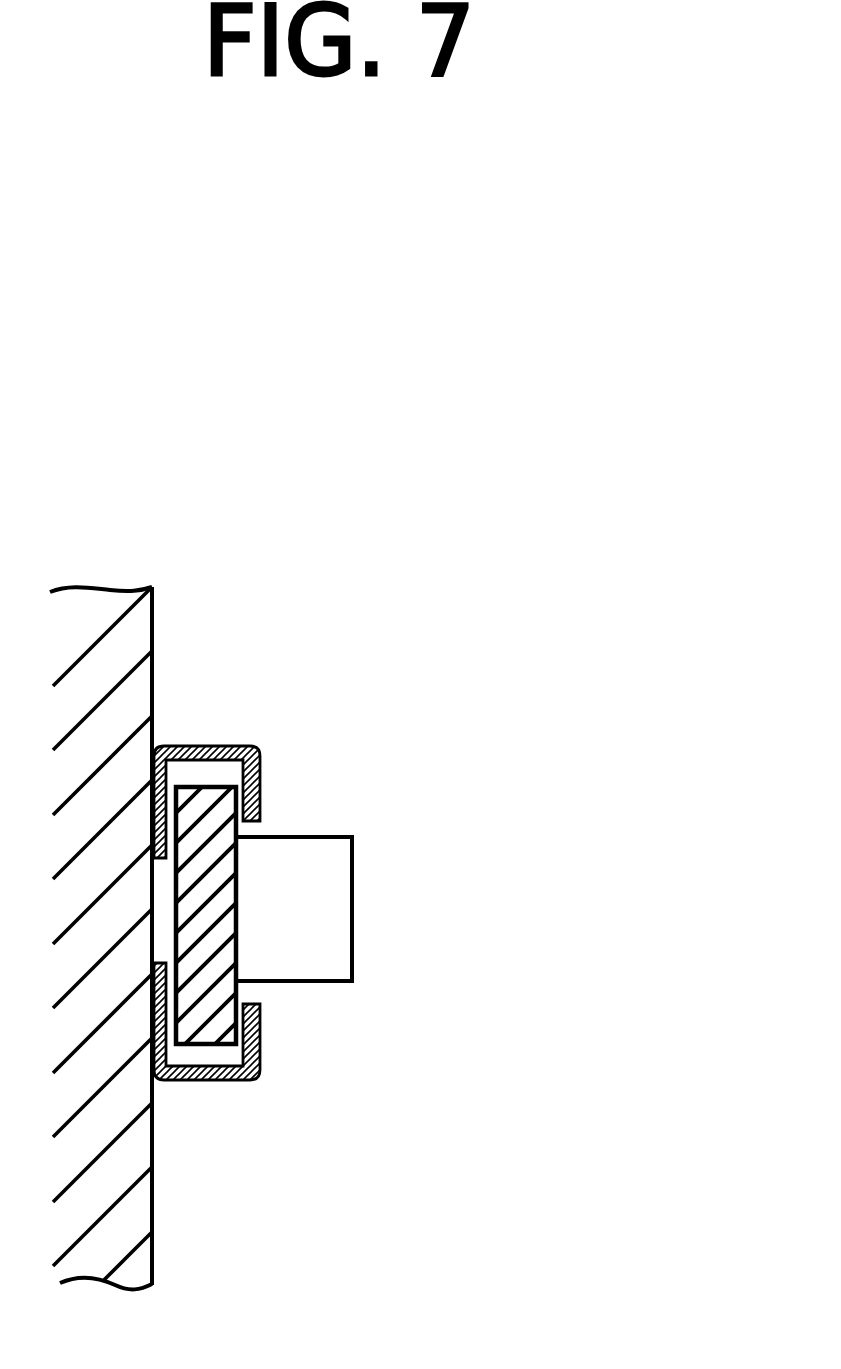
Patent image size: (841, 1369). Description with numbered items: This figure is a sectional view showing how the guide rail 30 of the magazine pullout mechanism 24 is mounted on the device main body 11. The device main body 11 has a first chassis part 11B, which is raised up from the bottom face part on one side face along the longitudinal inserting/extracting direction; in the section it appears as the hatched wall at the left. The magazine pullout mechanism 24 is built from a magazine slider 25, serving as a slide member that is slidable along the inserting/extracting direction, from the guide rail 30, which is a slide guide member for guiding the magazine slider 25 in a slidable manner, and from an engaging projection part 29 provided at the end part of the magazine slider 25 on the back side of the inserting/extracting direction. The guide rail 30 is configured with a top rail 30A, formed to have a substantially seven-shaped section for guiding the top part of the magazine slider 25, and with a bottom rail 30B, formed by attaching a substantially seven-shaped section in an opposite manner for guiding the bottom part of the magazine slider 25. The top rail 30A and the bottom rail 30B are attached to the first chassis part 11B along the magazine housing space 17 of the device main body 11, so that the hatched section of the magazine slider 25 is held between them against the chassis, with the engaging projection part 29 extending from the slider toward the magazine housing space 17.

The magazine housing space 17 is at (701, 985).
The device main body 11 is at (261, 968).
The first chassis part 11B is at (153, 1247).
The guide rail 30 is at (338, 884).
The top rail 30A is at (262, 765).
The bottom rail 30B is at (222, 1082).
The magazine pullout mechanism 24 is at (364, 959).
The magazine slider 25 is at (235, 975).
The engaging projection part 29 is at (330, 895).